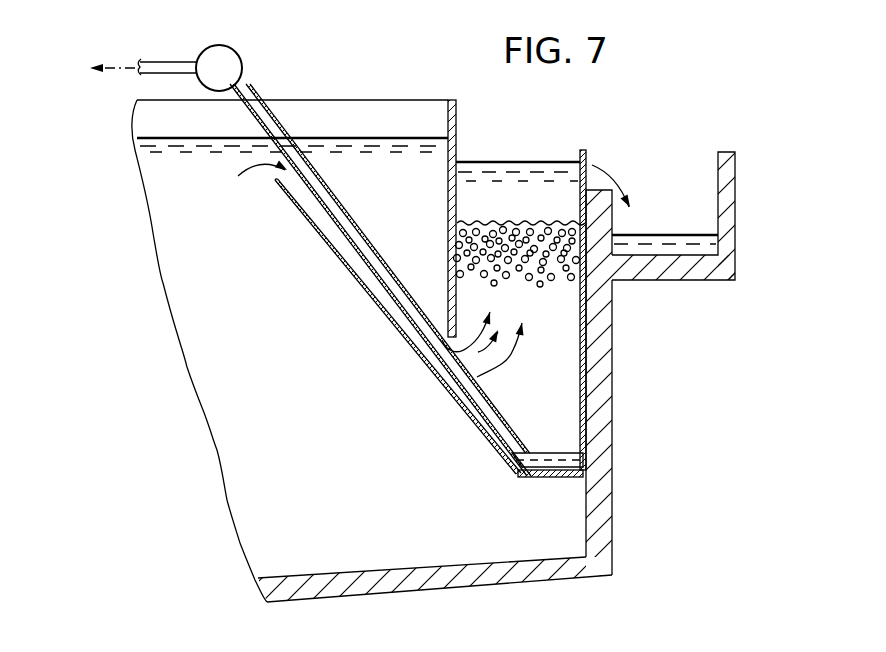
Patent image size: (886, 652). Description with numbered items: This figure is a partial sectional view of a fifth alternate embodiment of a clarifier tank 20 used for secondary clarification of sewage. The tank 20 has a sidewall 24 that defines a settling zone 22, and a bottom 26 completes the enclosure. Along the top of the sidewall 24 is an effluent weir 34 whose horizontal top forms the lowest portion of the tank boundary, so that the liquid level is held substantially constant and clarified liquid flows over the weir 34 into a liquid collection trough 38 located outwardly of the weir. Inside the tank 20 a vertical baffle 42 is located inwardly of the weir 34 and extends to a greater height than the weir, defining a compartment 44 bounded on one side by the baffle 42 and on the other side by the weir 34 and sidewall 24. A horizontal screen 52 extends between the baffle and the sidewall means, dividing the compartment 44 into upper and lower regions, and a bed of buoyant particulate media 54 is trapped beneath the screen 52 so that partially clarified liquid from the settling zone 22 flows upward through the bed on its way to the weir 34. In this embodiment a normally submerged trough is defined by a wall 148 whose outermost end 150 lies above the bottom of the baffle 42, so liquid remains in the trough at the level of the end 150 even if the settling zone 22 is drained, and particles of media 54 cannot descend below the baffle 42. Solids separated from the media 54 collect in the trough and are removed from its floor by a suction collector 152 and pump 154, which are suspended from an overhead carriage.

The clarifier tank 20 is at (628, 446).
The settling zone 22 is at (263, 361).
The sidewall 24 is at (605, 385).
The bottom 26 is at (580, 567).
The effluent weir 34 is at (587, 154).
The liquid collection trough 38 is at (659, 220).
The vertical baffle 42 is at (456, 120).
The compartment 44 is at (533, 293).
The screen 52 is at (483, 223).
The particulate media 54 is at (472, 254).
The wall 148 is at (413, 348).
The outermost end 150 is at (275, 180).
The suction collector 152 is at (547, 452).
The pump 154 is at (243, 53).